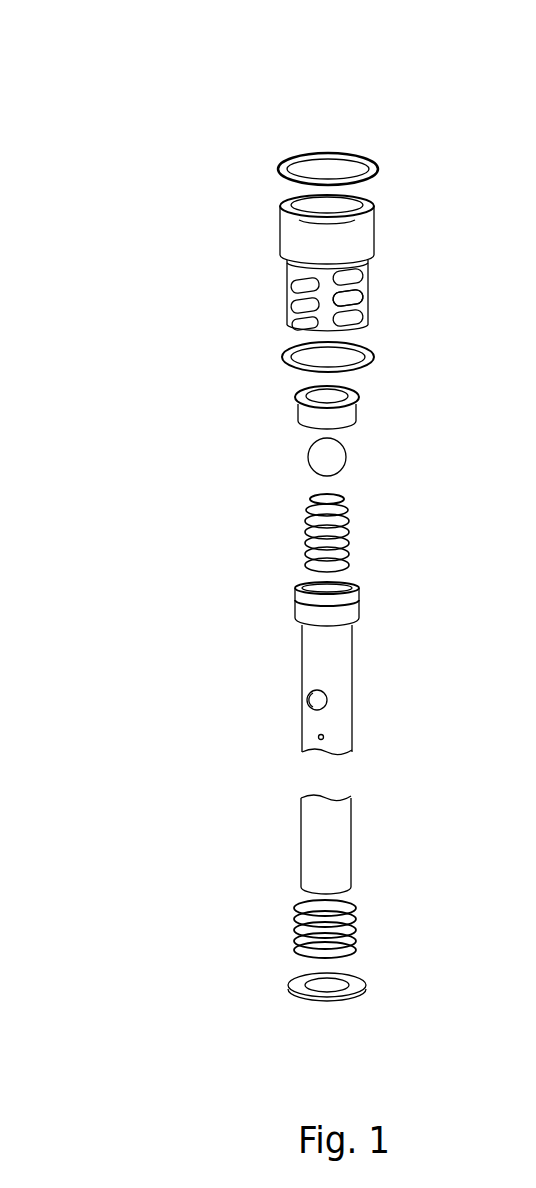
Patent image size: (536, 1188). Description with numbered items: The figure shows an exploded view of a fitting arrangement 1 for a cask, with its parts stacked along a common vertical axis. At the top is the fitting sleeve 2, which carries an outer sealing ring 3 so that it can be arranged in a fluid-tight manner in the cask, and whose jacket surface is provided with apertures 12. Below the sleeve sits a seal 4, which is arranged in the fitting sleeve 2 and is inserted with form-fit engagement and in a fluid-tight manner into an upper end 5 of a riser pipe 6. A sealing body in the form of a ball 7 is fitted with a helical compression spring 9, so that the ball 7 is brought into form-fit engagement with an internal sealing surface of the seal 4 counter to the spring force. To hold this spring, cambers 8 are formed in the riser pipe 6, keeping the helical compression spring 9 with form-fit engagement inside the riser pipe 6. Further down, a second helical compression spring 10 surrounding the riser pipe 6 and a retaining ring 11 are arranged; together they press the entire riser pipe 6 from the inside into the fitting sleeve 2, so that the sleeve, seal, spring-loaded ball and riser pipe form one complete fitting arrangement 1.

The fitting arrangement 1 is at (175, 123).
The fitting sleeve 2 is at (282, 251).
The outer sealing ring 3 is at (287, 362).
The seal 4 is at (307, 418).
The upper end 5 is at (308, 608).
The riser pipe 6 is at (317, 658).
The ball 7 is at (347, 457).
The cambers 8 is at (303, 703).
The helical compression spring 9 is at (347, 542).
The helical compression spring 10 is at (353, 923).
The retaining ring 11 is at (343, 997).
The apertures 12 is at (347, 293).